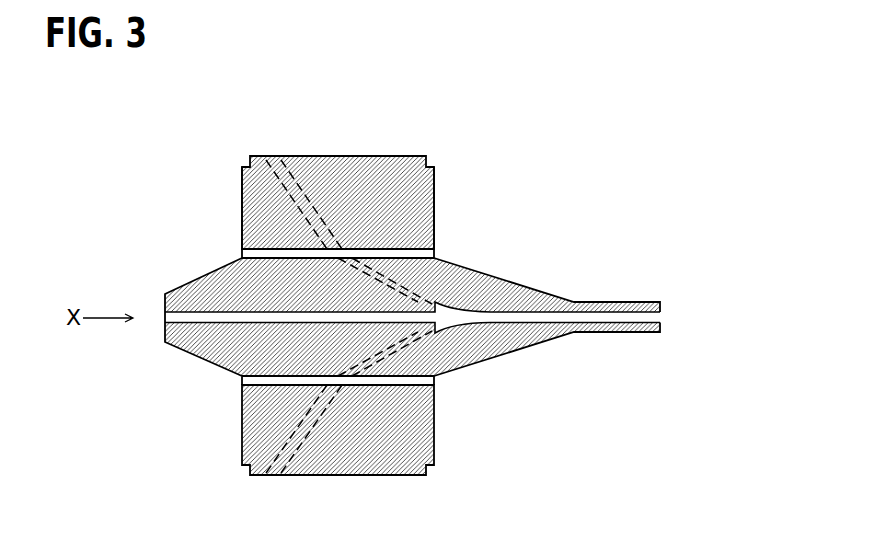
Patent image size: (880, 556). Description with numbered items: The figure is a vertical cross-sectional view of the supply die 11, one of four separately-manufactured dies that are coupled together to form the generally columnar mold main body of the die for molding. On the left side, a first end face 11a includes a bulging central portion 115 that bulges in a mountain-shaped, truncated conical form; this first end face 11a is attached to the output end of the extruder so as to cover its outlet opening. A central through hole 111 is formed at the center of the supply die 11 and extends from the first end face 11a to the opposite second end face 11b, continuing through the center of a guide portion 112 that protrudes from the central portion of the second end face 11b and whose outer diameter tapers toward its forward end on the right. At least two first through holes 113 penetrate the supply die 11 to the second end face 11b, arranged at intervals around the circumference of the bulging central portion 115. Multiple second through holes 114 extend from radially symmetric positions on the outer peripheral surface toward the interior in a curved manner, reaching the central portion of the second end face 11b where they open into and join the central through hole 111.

The supply die 11 is at (323, 156).
The first end face 11a is at (242, 207).
The second end face 11b is at (434, 218).
The central through hole 111 is at (237, 316).
The guide portion 112 is at (540, 288).
The first through holes 113 is at (410, 253).
The second through holes 114 is at (320, 222).
The bulging central portion 115 is at (195, 295).